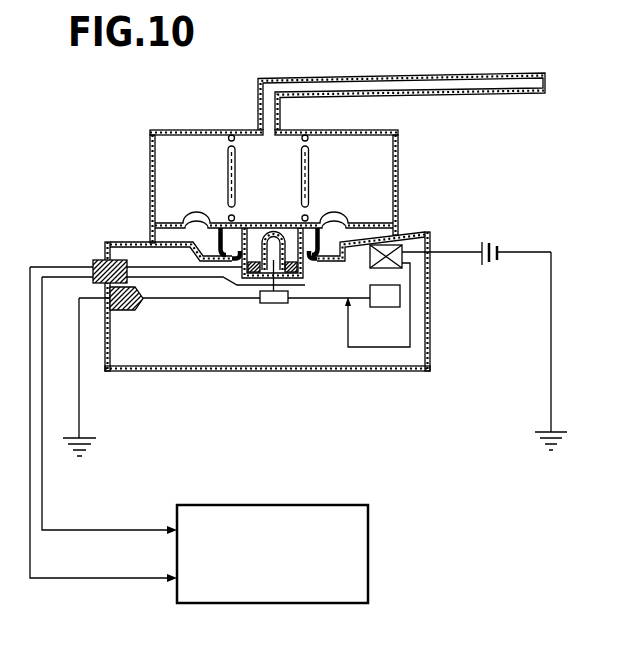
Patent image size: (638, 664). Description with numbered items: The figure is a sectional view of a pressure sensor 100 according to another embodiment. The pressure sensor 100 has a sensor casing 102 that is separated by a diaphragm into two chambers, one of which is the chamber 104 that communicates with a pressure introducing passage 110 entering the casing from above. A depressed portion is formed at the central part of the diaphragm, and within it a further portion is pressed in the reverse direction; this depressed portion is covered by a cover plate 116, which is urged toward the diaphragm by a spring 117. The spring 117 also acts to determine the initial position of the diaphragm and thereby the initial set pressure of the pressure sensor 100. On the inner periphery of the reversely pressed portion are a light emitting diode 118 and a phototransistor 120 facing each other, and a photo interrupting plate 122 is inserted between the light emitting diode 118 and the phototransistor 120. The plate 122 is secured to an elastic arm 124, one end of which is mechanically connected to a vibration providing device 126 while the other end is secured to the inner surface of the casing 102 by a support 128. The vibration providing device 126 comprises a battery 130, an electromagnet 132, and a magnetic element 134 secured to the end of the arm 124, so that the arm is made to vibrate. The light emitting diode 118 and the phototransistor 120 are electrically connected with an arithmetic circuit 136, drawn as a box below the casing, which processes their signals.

The pressure sensor 100 is at (413, 230).
The sensor casing 102 is at (397, 157).
The chamber 104 is at (360, 142).
The pressure introducing passage 110 is at (452, 83).
The cover plate 116 is at (263, 223).
The spring 117 is at (308, 178).
The light emitting diode 118 is at (253, 270).
The phototransistor 120 is at (293, 271).
The photo interrupting plate 122 is at (272, 303).
The elastic arm 124 is at (180, 299).
The vibration providing device 126 is at (409, 248).
The support 128 is at (133, 311).
The battery 130 is at (495, 241).
The electromagnet 132 is at (389, 264).
The magnetic element 134 is at (389, 304).
The arithmetic circuit 136 is at (305, 505).